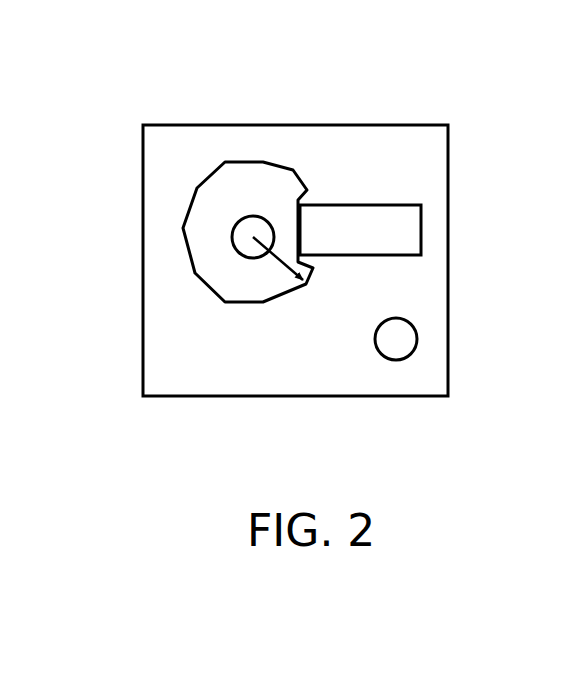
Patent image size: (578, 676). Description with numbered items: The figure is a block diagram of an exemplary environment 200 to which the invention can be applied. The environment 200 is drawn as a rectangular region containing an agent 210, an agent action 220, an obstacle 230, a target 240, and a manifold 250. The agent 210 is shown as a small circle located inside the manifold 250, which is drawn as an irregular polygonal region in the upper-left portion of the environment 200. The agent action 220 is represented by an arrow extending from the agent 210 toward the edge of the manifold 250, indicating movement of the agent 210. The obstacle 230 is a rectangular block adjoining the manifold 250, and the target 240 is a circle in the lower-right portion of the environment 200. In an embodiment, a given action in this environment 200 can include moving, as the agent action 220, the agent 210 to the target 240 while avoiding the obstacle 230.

The environment 200 is at (449, 125).
The agent 210 is at (232, 224).
The agent action 220 is at (287, 272).
The obstacle 230 is at (423, 224).
The target 240 is at (419, 332).
The manifold 250 is at (222, 165).